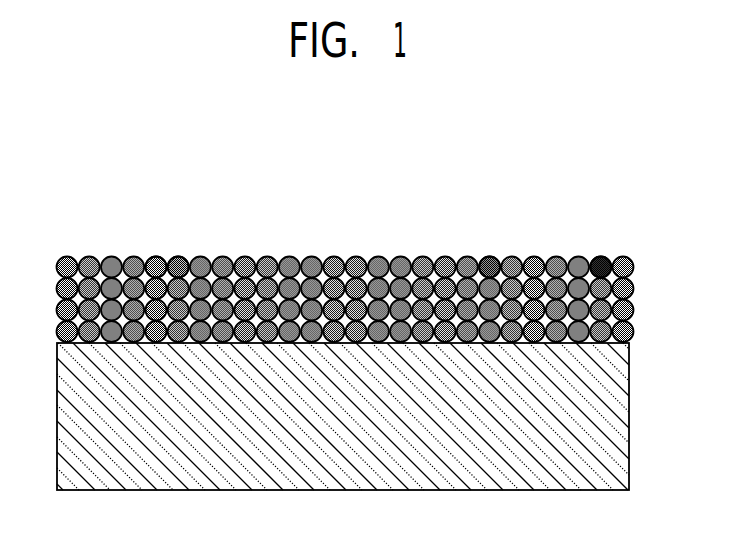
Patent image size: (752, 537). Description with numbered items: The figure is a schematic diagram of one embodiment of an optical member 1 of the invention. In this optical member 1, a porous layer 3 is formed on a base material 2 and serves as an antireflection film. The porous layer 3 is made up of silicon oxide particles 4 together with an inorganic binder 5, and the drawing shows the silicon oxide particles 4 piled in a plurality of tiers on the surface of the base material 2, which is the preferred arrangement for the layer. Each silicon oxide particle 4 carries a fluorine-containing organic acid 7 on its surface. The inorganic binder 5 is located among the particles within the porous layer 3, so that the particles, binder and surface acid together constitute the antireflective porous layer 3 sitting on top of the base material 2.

The optical member 1 is at (344, 219).
The base material 2 is at (608, 418).
The porous layer 3 is at (640, 257).
The silicon oxide particle 4 is at (490, 260).
The inorganic binder 5 is at (167, 261).
The fluorine-containing organic acid 7 is at (601, 259).